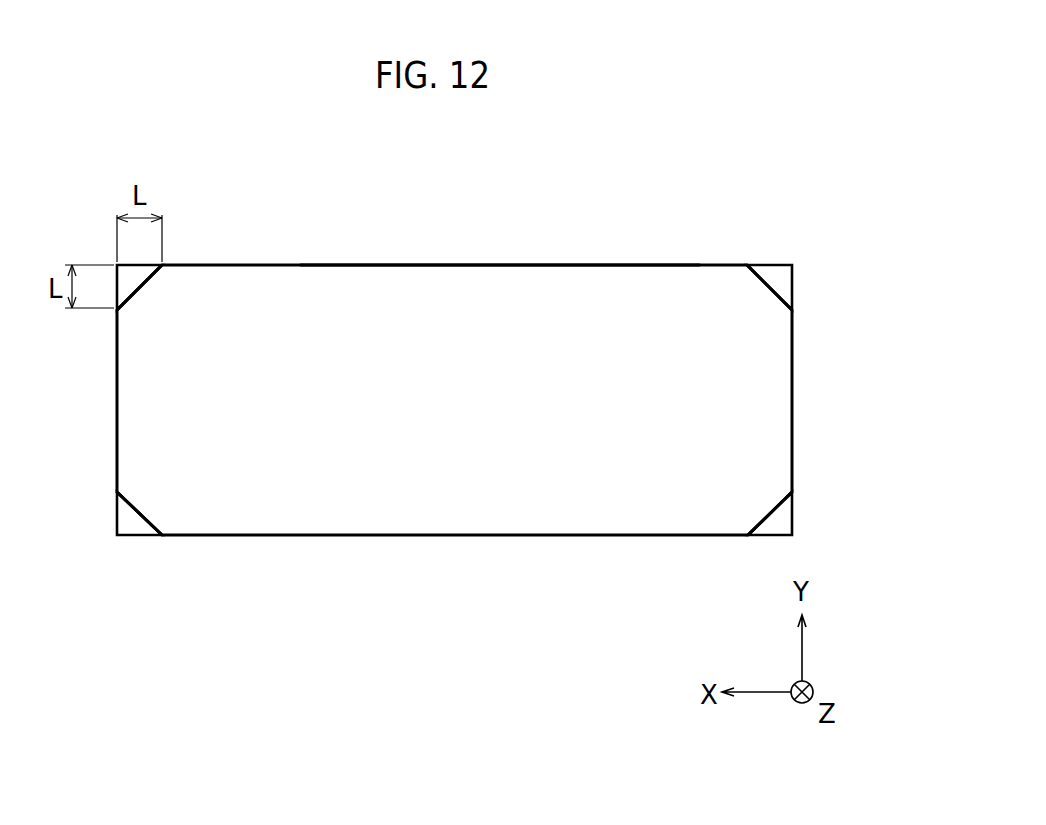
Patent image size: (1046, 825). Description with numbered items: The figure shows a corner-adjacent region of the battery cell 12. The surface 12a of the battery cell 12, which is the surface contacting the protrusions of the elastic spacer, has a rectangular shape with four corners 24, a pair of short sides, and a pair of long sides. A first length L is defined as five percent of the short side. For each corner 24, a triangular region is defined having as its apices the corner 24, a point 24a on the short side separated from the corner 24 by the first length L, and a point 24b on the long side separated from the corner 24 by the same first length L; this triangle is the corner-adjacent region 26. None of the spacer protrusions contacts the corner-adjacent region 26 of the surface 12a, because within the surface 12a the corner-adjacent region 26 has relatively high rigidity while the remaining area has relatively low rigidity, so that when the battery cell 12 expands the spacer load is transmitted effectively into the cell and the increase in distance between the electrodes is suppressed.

The battery cell 12 is at (806, 184).
The surface of the battery cell 12a is at (583, 298).
The corner 24 is at (117, 265).
The point on the short side 24a is at (117, 310).
The point on the long side 24b is at (162, 265).
The corner-adjacent region 26 is at (136, 274).